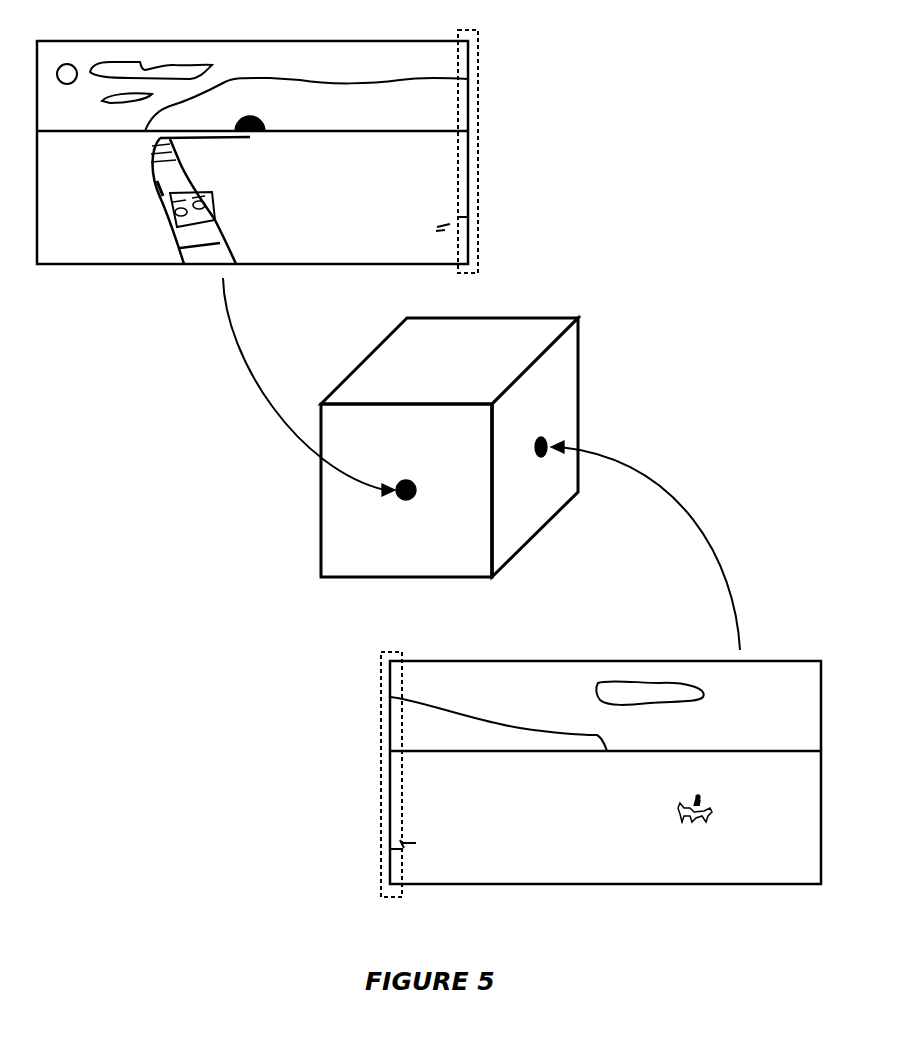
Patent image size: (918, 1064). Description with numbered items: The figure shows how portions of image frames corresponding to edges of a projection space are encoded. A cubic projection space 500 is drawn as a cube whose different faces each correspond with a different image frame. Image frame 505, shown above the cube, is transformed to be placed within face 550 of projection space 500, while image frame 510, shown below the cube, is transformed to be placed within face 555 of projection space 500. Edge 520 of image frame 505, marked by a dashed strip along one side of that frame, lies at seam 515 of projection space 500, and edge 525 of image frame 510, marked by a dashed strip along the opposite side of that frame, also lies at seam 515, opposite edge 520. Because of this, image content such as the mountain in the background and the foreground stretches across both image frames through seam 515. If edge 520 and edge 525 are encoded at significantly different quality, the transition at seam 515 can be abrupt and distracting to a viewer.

The cubic projection space 500 is at (456, 427).
The image frame 505 is at (148, 41).
The image frame 510 is at (413, 661).
The seam 515 is at (494, 493).
The edge 520 is at (470, 30).
The edge 525 is at (393, 652).
The face 550 is at (350, 534).
The face 555 is at (565, 404).